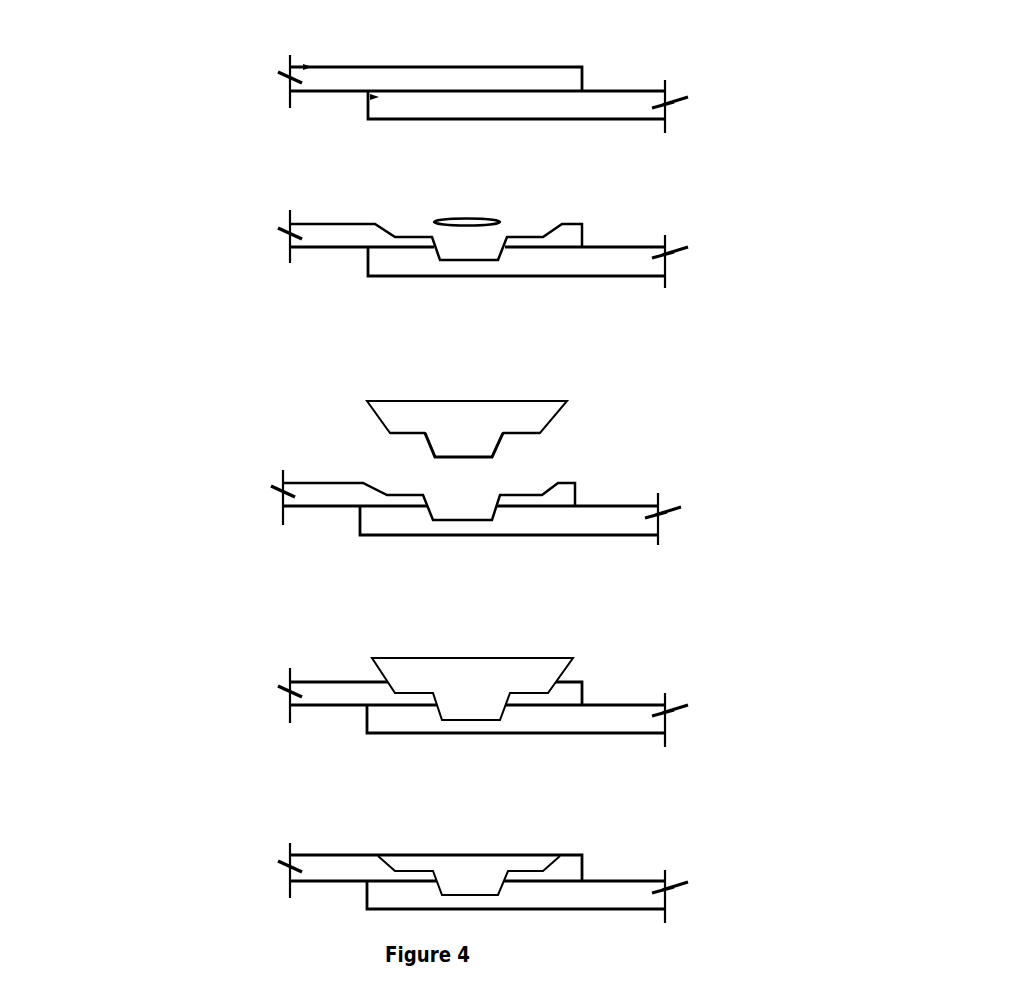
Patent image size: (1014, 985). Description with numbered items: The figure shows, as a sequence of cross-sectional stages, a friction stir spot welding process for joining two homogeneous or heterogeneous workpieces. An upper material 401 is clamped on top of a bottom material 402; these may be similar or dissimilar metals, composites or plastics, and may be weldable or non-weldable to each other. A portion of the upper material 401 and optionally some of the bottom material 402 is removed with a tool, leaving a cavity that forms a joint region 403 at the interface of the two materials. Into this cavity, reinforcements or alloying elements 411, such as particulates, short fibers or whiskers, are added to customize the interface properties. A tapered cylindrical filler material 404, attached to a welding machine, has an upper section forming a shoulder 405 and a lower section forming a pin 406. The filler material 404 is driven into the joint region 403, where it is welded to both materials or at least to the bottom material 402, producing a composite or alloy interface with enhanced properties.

The material 401 is at (278, 66).
The another material 402 is at (338, 110).
The joint region 403 is at (437, 498).
The tapered cylindrical filler material 404 is at (397, 397).
The shoulder 405 is at (494, 435).
The pin 406 is at (420, 446).
The reinforcements or alloying elements 411 is at (438, 220).